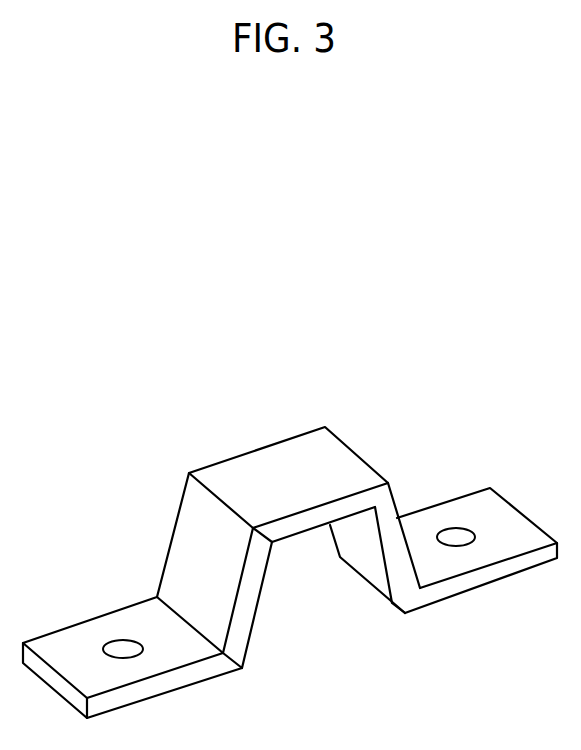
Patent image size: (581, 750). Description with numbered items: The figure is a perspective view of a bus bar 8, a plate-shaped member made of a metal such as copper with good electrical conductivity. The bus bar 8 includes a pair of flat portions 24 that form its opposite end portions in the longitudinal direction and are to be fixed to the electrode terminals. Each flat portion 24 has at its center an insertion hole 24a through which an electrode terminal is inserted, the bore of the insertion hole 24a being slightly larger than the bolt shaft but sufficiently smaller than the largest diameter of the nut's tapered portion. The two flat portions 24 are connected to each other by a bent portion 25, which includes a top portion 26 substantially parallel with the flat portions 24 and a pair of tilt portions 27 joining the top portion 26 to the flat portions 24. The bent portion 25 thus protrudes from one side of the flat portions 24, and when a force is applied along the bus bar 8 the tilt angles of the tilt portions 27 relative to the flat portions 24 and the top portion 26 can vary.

The bus bar 8 is at (150, 430).
The flat portion 24 is at (56, 647).
The insertion hole 24a is at (125, 646).
The bent portion 25 is at (362, 425).
The top portion 26 is at (277, 458).
The tilt portion 27 is at (183, 552).